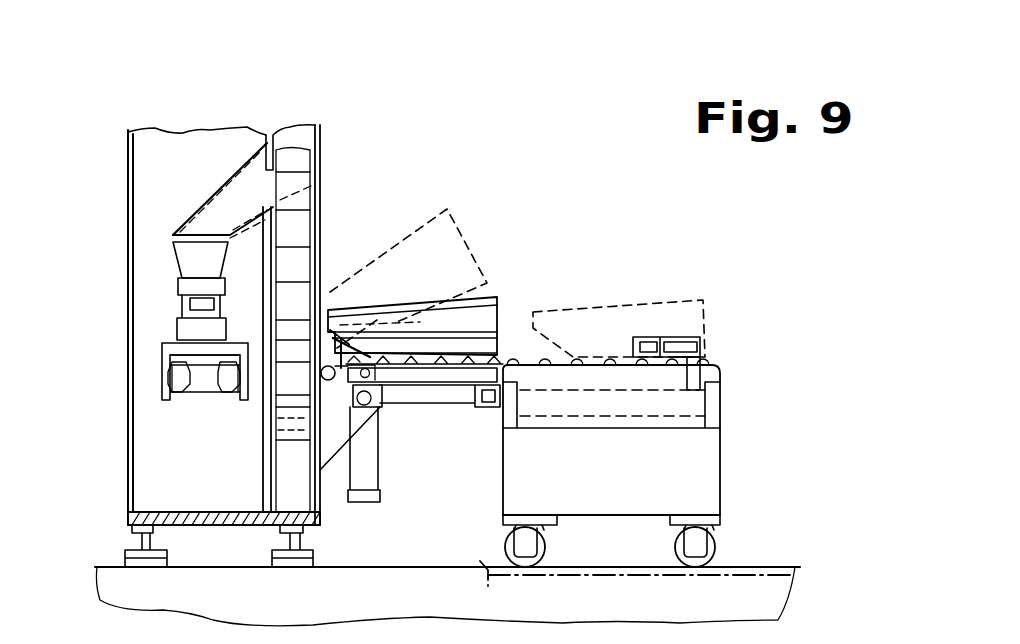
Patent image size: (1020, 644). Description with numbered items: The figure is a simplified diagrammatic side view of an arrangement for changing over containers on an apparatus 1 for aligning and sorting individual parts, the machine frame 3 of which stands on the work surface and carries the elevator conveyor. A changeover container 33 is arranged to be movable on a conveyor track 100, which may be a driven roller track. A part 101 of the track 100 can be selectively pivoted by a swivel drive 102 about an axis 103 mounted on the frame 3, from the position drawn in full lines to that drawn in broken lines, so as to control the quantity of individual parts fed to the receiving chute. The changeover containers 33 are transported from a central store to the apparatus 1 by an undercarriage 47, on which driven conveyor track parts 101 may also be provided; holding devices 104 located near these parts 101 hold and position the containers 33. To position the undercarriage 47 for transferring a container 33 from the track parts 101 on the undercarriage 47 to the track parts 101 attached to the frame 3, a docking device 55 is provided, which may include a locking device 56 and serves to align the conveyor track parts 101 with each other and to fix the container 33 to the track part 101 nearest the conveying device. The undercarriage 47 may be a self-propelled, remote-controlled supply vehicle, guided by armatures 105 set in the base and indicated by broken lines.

The apparatus 1 is at (172, 100).
The machine frame 3 is at (157, 472).
The changeover container 33 is at (368, 310).
The undercarriage 47 is at (712, 478).
The docking device 55 is at (487, 410).
The locking device 56 is at (355, 368).
The conveyor track 100 is at (427, 378).
The conveyor track part 101 is at (420, 306).
The swivel drive 102 is at (380, 488).
The axis 103 is at (340, 312).
The holding device 104 is at (677, 338).
The armature 105 is at (731, 576).